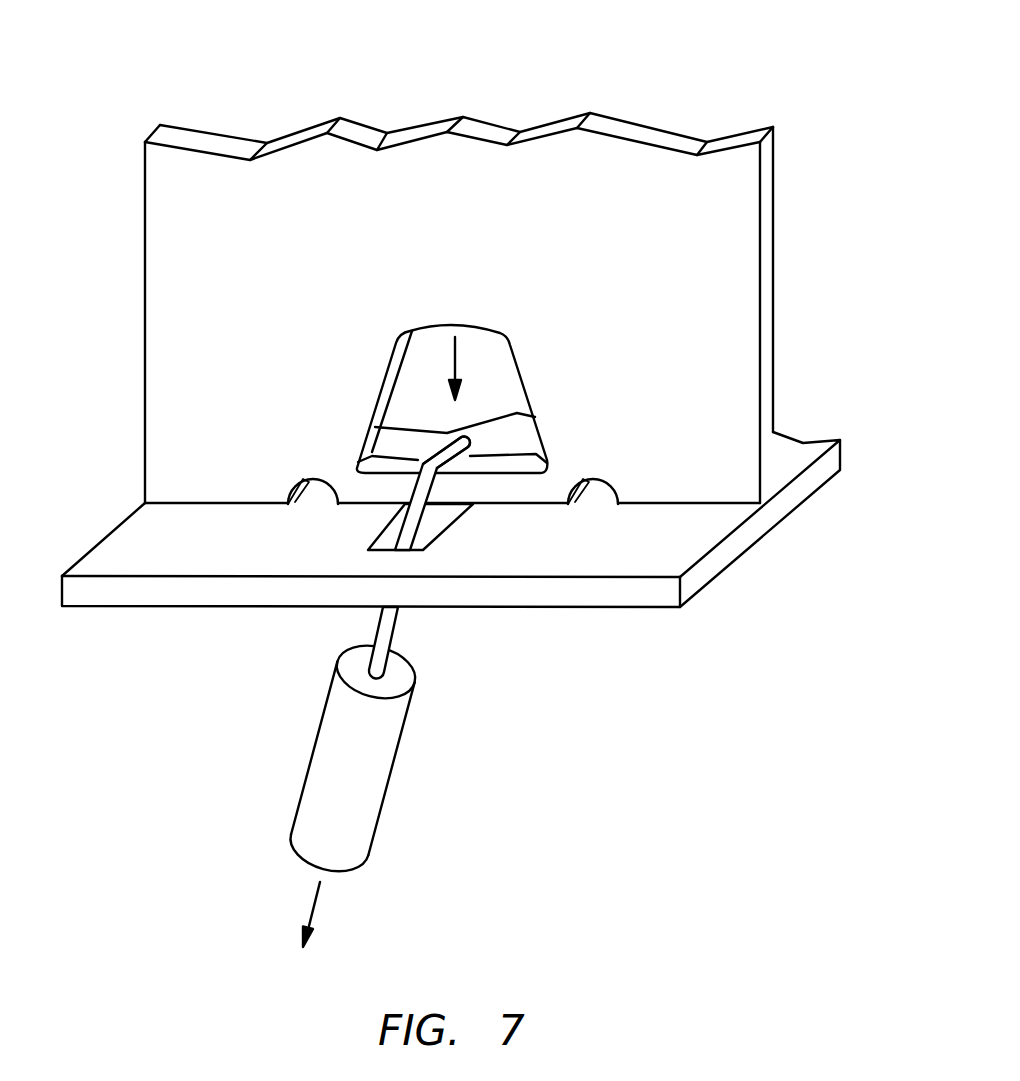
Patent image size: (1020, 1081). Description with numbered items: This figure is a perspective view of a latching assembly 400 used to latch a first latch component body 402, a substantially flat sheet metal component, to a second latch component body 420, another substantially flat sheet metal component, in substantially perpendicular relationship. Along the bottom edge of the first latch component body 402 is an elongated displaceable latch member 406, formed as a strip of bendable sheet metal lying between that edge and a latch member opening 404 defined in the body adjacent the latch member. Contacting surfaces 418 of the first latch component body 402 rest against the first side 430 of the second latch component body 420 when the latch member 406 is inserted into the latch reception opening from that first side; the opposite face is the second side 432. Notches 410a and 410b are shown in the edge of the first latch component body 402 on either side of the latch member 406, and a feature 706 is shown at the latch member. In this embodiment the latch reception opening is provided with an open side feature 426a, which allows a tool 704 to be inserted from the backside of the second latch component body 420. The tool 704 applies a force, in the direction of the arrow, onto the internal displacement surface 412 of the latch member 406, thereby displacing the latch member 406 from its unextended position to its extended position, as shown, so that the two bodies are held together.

The latching assembly 400 is at (807, 53).
The first latch component body 402 is at (767, 220).
The latch member opening 404 is at (490, 345).
The displaceable latch member 406 is at (457, 485).
The first notch 410a is at (318, 490).
The second notch 410b is at (600, 488).
The internal displacement surface 412 is at (473, 460).
The contacting surfaces 418 is at (213, 502).
The second latch component body 420 is at (765, 520).
The open side feature 426a is at (437, 527).
The first side 430 is at (130, 542).
The second side 432 is at (112, 608).
The tool 704 is at (405, 503).
The tab 706 is at (443, 455).